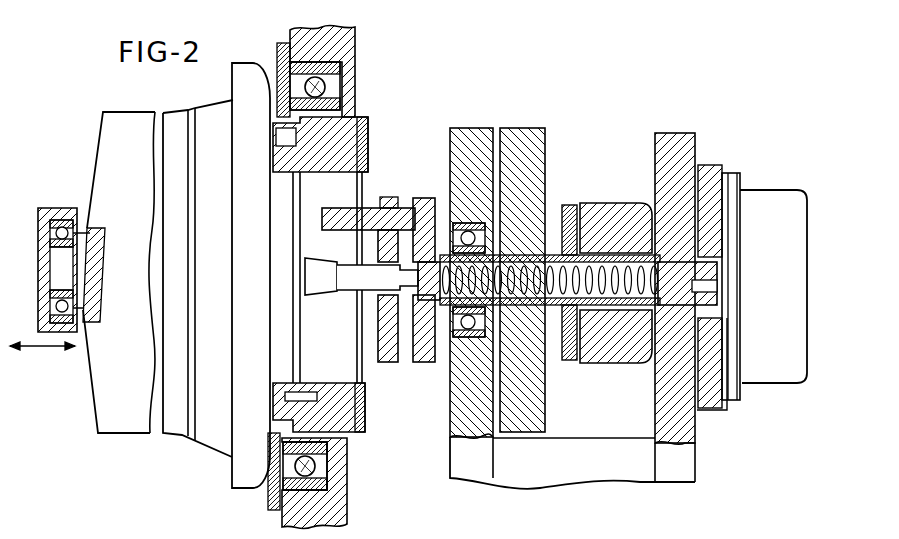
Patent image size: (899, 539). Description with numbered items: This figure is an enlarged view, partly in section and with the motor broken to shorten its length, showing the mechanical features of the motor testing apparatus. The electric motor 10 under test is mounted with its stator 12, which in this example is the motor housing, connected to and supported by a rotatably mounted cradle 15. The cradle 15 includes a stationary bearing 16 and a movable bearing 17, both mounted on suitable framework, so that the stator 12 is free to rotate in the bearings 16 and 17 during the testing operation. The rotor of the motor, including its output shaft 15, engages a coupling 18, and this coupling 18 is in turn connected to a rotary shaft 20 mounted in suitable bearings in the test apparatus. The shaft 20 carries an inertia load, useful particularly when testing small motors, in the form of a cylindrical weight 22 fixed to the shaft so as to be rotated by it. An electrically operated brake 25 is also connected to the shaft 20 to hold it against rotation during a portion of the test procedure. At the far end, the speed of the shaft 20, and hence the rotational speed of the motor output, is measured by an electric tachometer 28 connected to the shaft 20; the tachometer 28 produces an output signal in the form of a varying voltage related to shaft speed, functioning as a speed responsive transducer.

The electric motor 10 is at (162, 441).
The stator 12 is at (223, 275).
The cradle 15 is at (347, 125).
The stationary bearing 16 is at (293, 50).
The movable bearing 17 is at (60, 212).
The coupling 18 is at (418, 194).
The rotary shaft 20 is at (540, 262).
The cylindrical weight 22 is at (534, 400).
The electrically operated brake 25 is at (612, 200).
The electric tachometer 28 is at (776, 206).